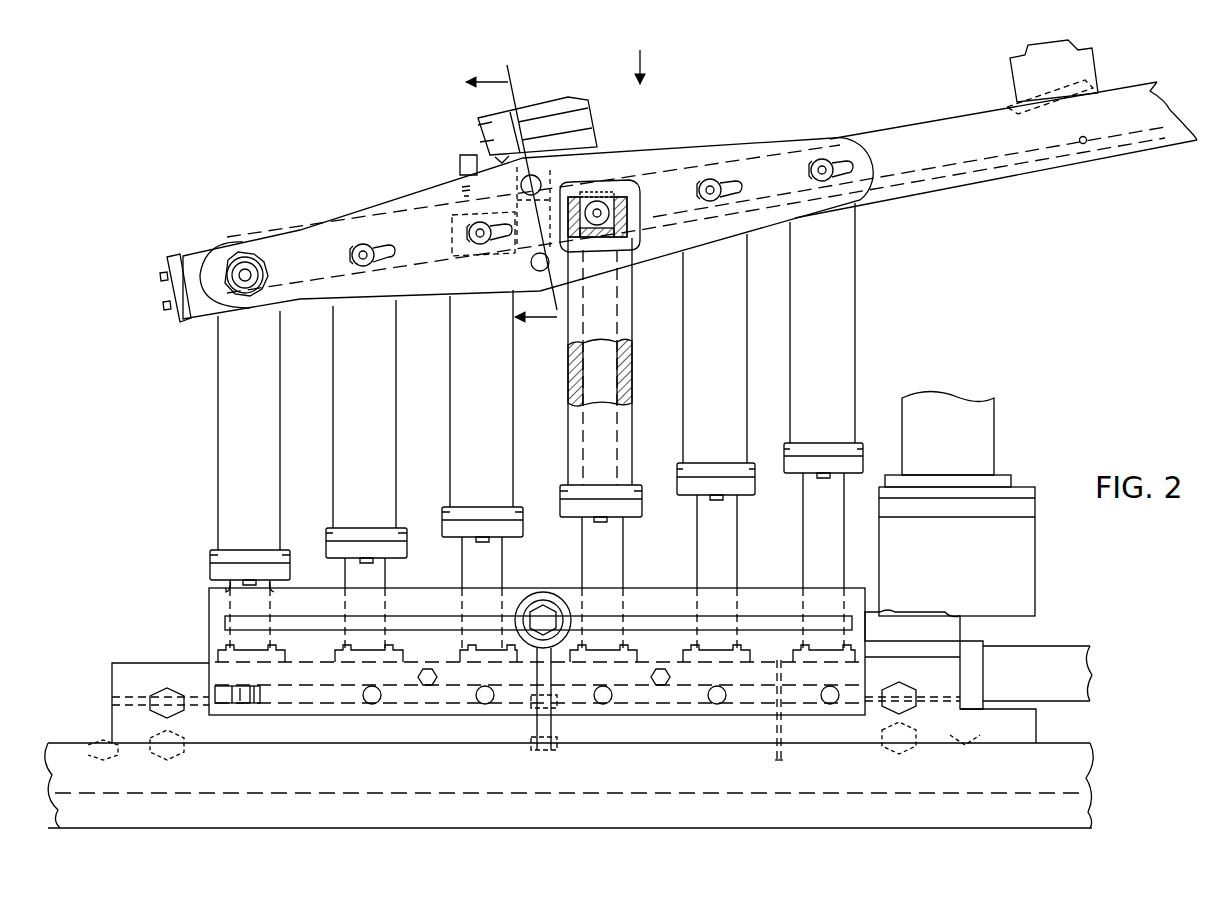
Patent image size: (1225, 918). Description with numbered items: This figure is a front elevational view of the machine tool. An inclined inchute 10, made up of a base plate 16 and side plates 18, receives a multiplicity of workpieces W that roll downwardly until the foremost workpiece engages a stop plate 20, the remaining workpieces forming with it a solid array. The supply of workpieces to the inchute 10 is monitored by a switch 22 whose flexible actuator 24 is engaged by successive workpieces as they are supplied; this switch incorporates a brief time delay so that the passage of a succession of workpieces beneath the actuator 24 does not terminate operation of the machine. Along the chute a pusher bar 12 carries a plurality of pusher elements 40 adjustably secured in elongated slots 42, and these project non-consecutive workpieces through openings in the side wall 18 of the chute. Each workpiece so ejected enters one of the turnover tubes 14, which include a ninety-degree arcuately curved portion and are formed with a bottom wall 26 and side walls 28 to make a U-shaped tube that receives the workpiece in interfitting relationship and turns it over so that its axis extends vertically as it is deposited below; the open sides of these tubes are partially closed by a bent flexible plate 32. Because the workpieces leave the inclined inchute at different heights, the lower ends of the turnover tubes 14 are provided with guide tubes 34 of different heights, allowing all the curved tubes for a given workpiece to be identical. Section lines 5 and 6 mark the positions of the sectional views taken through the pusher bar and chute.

The section line 5- 5 is at (511, 196).
The view arrow 6 is at (640, 54).
The inchute 10 is at (927, 90).
The pusher bar 12 is at (683, 158).
The turnover tubes 14 is at (634, 407).
The base plate 16 is at (1082, 143).
The side plates 18 is at (1160, 96).
The stop plate 20 is at (197, 257).
The switch 22 is at (1095, 60).
The flexible actuator 24 is at (1010, 105).
The bottom wall 26 is at (602, 245).
The side walls 28 is at (637, 205).
The bent flexible plate 32 is at (603, 193).
The guide tubes 34 is at (805, 541).
The pusher elements 40 is at (363, 253).
The elongated slots 42 is at (393, 246).
The workpieces W is at (247, 258).